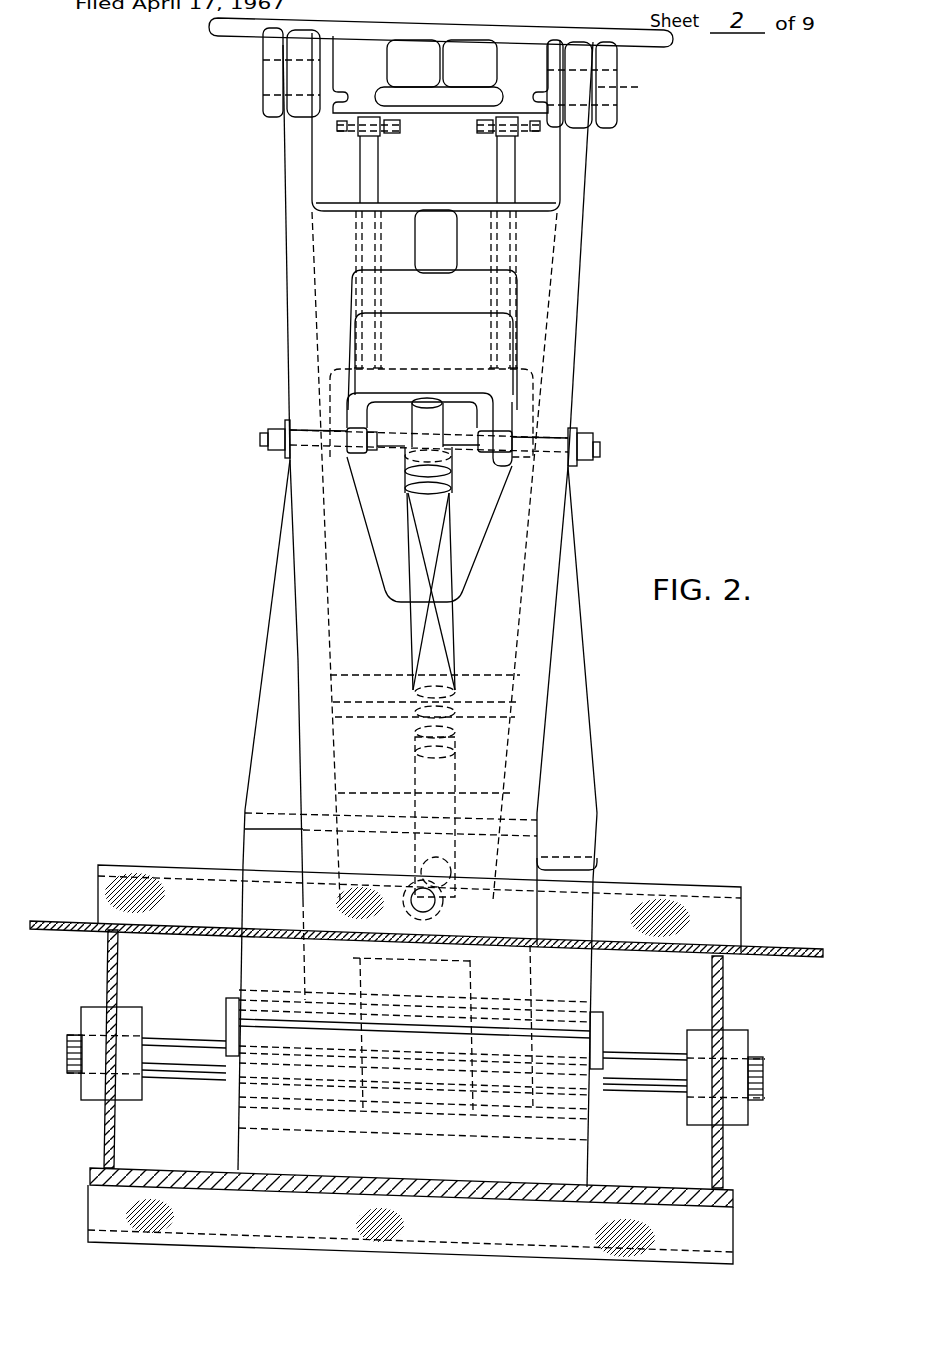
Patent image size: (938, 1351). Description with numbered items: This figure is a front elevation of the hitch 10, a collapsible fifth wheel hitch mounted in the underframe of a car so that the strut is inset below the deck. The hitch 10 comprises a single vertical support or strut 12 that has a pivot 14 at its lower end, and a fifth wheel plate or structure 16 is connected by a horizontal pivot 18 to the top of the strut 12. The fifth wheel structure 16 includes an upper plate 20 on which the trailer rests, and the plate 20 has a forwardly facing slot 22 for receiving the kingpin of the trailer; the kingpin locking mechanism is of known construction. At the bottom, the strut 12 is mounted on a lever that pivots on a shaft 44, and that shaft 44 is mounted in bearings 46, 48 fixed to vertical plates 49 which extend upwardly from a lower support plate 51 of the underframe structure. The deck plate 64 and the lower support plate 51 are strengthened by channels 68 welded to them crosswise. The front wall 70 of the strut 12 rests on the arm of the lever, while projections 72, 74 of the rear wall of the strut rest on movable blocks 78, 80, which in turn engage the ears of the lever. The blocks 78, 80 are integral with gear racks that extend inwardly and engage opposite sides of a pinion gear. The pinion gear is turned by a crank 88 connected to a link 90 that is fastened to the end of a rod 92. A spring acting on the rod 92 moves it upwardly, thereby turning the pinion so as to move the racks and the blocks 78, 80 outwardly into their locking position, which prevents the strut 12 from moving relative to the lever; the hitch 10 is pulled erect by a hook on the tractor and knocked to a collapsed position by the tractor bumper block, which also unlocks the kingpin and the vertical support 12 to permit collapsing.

The hitch 10 is at (593, 388).
The vertical support or strut 12 is at (573, 338).
The pivot 14 is at (603, 1015).
The fifth wheel plate or structure 16 is at (678, 45).
The horizontal pivot 18 is at (633, 86).
The upper plate 20 is at (225, 34).
The forwardly facing slot 22 is at (437, 32).
The shaft 44 is at (70, 1035).
The bearing 46 is at (133, 1103).
The bearing 48 is at (693, 1125).
The vertical plates 49 is at (117, 982).
The lower support plate 51 is at (730, 1197).
The deck plate 64 is at (53, 921).
The channels 68 is at (706, 892).
The front wall 70 is at (503, 652).
The projection 72 is at (268, 712).
The projection 74 is at (580, 712).
The movable block 78 is at (263, 850).
The movable block 80 is at (580, 918).
The crank 88 is at (437, 903).
The link 90 is at (442, 786).
The rod 92 is at (445, 553).